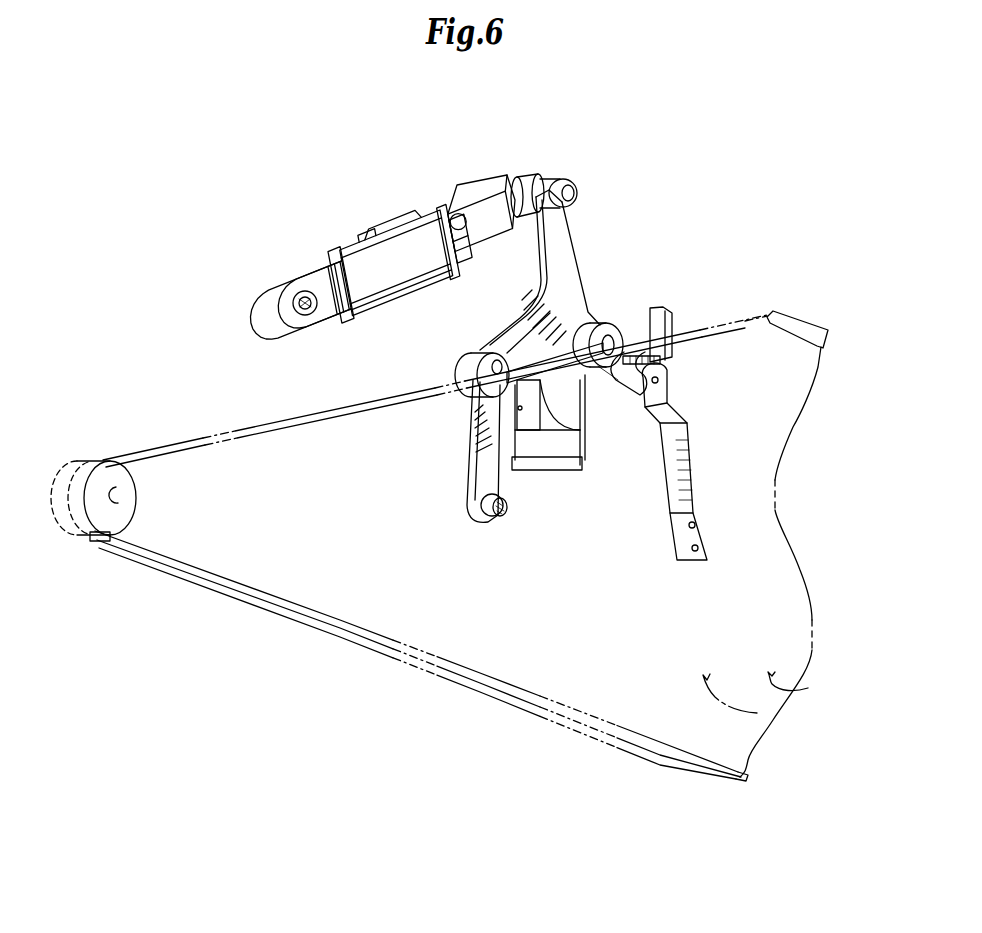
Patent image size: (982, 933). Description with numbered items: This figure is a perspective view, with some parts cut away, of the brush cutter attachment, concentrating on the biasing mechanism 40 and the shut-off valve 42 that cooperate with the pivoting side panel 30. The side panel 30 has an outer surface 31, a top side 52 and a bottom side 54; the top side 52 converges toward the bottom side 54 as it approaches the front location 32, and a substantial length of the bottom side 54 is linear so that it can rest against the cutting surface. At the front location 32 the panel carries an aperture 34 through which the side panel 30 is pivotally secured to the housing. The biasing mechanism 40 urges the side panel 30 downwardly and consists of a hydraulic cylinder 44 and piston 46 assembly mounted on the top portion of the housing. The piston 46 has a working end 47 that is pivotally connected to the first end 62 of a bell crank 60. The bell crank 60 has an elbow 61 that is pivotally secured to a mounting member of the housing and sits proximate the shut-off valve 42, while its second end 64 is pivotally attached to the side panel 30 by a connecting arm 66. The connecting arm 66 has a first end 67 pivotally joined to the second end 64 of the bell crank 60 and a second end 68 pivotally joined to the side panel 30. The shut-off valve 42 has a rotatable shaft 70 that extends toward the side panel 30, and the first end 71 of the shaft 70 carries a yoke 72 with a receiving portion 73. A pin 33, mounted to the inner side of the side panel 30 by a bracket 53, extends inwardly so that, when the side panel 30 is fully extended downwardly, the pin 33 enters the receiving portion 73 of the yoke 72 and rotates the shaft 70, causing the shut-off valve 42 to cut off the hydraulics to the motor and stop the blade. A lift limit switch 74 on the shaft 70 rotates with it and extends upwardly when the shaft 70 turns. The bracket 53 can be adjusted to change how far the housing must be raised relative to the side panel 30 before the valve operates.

The side panel 30 is at (808, 688).
The outer surface 31 is at (757, 713).
The front location 32 is at (150, 523).
The pin 33 is at (668, 385).
The aperture 34 is at (120, 497).
The biasing mechanism 40 is at (620, 162).
The shut-off valve 42 is at (540, 437).
The cylinder 44 is at (383, 258).
The piston 46 is at (462, 218).
The working end 47 is at (497, 185).
The top side 52 is at (293, 420).
The bracket 53 is at (676, 497).
The bottom side 54 is at (192, 580).
The bell crank 60 is at (566, 243).
The elbow 61 is at (598, 332).
The first end 62 is at (542, 190).
The second end 64 is at (465, 350).
The connecting arm 66 is at (470, 445).
The first end 67 is at (478, 380).
The second end 68 is at (458, 535).
The rotatable shaft 70 is at (586, 378).
The first end 71 is at (604, 383).
The yoke 72 is at (622, 345).
The receiving portion 73 is at (762, 310).
The lift limit switch 74 is at (663, 320).